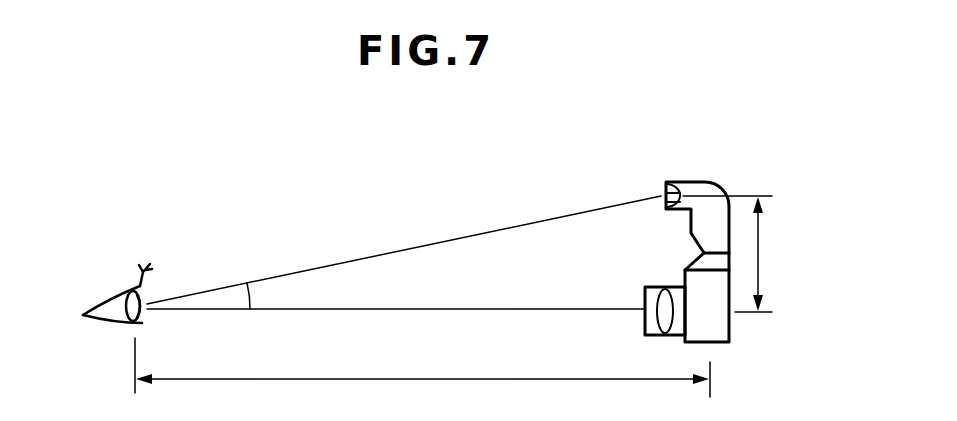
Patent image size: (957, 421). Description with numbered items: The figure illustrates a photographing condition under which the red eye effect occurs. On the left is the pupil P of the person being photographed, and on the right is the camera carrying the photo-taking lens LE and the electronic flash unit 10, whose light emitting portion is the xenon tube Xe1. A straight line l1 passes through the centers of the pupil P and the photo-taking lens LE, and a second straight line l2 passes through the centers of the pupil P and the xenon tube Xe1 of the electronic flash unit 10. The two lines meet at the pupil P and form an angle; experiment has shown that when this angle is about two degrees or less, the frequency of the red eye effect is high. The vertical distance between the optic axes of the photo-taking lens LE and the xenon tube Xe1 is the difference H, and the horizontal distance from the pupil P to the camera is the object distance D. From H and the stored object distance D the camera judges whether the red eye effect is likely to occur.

The electronic flash unit 10 is at (722, 185).
The xenon tube Xe1 is at (663, 195).
The photo-taking lens LE is at (662, 323).
The pupil P is at (123, 327).
The straight line l1 is at (396, 295).
The straight line l2 is at (404, 250).
The object distance D is at (422, 374).
The difference between lens and light emitting portion H is at (734, 254).